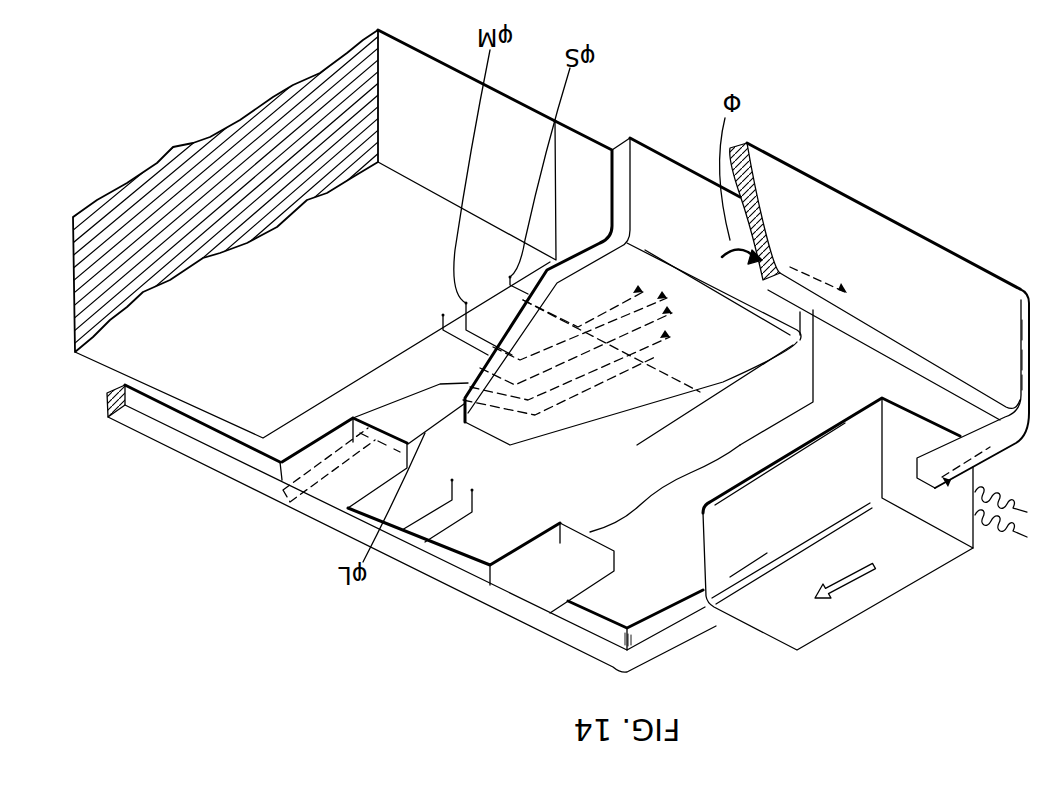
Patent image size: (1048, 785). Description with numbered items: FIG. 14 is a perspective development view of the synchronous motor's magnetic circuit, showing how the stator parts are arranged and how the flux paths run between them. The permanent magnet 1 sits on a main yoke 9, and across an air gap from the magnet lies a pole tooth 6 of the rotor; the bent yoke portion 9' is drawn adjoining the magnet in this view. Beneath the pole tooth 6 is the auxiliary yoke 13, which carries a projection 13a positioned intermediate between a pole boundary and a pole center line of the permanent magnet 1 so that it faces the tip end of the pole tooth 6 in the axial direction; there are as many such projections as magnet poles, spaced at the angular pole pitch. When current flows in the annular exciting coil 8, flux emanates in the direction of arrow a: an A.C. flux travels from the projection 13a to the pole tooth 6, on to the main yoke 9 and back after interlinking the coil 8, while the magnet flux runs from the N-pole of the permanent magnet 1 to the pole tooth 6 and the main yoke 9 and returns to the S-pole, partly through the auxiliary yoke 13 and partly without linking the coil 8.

The permanent magnet 1 is at (253, 263).
The pole tooth 6 is at (882, 240).
The annular exciting coil 8 is at (782, 622).
The main yoke 9 is at (782, 235).
The bent yoke plate 9' is at (583, 311).
The auxiliary yoke 13 is at (190, 446).
The projection 13a is at (333, 467).
The arrow a is at (850, 578).